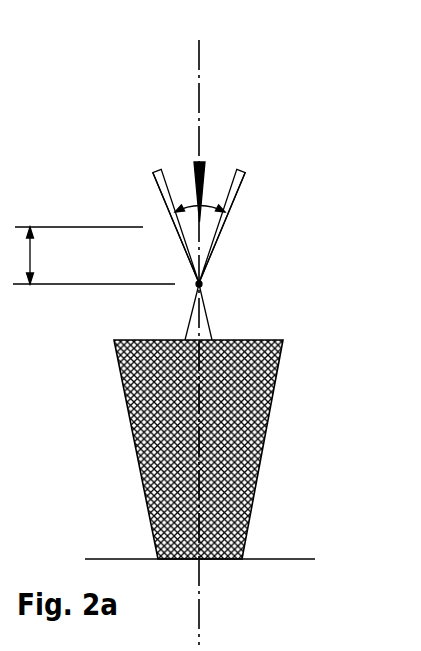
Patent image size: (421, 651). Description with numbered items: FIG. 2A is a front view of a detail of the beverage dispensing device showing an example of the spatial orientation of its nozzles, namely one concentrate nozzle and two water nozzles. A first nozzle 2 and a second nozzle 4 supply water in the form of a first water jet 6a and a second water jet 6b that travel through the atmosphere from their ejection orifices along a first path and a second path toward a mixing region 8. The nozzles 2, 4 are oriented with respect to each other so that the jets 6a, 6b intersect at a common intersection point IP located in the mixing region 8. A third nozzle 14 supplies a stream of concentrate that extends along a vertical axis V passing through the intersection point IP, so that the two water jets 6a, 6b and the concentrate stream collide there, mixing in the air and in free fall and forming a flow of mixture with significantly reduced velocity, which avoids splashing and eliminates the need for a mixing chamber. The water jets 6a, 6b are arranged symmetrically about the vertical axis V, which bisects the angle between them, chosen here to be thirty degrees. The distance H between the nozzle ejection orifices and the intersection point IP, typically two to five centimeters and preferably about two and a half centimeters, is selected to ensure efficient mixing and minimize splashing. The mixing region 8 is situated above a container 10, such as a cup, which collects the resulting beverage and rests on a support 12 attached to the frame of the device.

The first nozzle 2 is at (151, 173).
The second nozzle 4 is at (245, 177).
The first water jet 6a is at (183, 248).
The second water jet 6b is at (213, 248).
The mixing region 8 is at (178, 302).
The container 10 is at (262, 453).
The support 12 is at (285, 559).
The third nozzle 14 is at (198, 162).
The vertical axis V is at (199, 70).
The distance H is at (91, 255).
The common intersection point IP is at (211, 285).